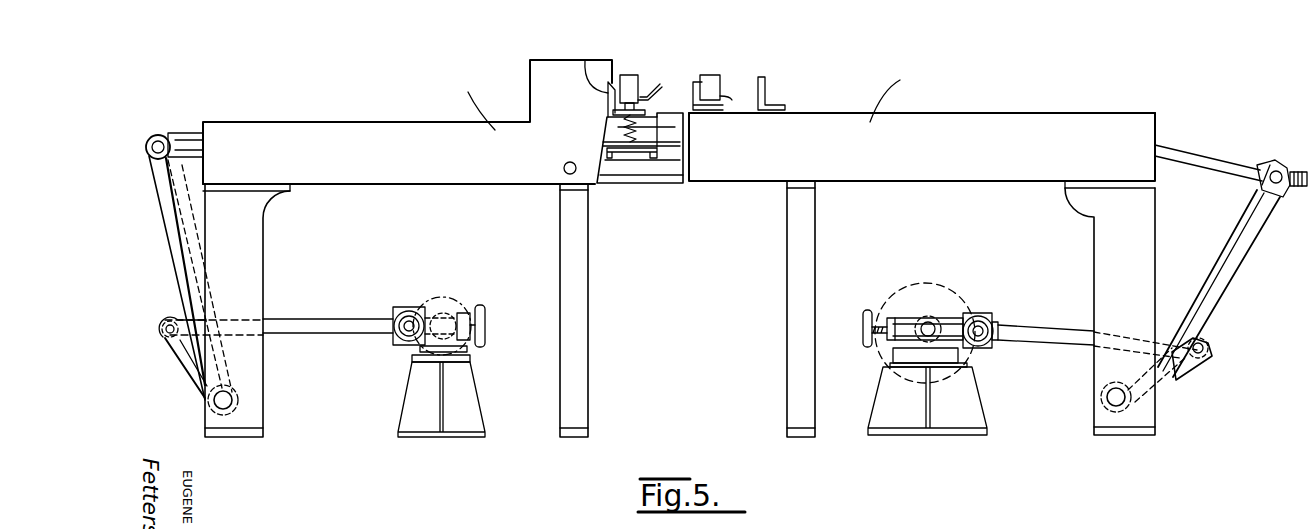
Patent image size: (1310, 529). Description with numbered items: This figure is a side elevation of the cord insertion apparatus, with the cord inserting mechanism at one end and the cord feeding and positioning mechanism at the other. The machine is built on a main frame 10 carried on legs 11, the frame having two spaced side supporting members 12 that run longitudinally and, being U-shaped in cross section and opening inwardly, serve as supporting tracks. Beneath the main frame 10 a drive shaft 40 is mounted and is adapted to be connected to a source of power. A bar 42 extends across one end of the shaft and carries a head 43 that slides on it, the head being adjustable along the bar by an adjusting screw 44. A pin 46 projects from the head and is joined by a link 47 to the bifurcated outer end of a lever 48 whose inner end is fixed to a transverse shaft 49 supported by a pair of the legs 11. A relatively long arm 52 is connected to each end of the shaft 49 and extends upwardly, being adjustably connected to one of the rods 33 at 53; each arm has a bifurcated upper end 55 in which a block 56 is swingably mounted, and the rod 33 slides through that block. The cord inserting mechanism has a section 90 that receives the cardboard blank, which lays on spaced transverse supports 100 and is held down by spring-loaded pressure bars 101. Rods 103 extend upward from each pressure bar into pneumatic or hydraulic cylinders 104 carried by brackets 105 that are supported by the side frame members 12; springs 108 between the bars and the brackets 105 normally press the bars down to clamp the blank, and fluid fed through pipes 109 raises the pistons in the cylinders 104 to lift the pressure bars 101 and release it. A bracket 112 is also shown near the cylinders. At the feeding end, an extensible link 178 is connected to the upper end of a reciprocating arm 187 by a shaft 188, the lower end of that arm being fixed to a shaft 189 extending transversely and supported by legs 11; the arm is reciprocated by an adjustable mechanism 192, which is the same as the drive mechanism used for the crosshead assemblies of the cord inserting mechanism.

The main frame 10 is at (925, 120).
The legs 11 is at (560, 241).
The side supporting members 12 is at (982, 122).
The rod 33 is at (1188, 155).
The drive shaft 40 is at (925, 283).
The bar 42 is at (948, 320).
The head 43 is at (990, 315).
The adjusting screw 44 is at (878, 310).
The pin 46 is at (977, 350).
The link 47 is at (1030, 325).
The lever 48 is at (1163, 378).
The shaft 49 is at (1106, 394).
The arm 52 is at (1222, 270).
The connection 53 is at (1276, 170).
The bifurcated upper end 55 is at (1258, 176).
The block 56 is at (1280, 195).
The section 90 is at (668, 133).
The transverse supports 100 is at (632, 150).
The pressure bars 101 is at (658, 150).
The rods 103 is at (620, 103).
The cylinders 104 is at (630, 75).
The brackets 105 is at (582, 58).
The springs 108 is at (624, 128).
The pipes 109 is at (660, 85).
The bracket 112 is at (765, 95).
The extensible link 178 is at (195, 130).
The reciprocating arm 187 is at (175, 185).
The shaft 188 is at (165, 135).
The shaft 189 is at (235, 396).
The adjustable mechanism 192 is at (432, 310).